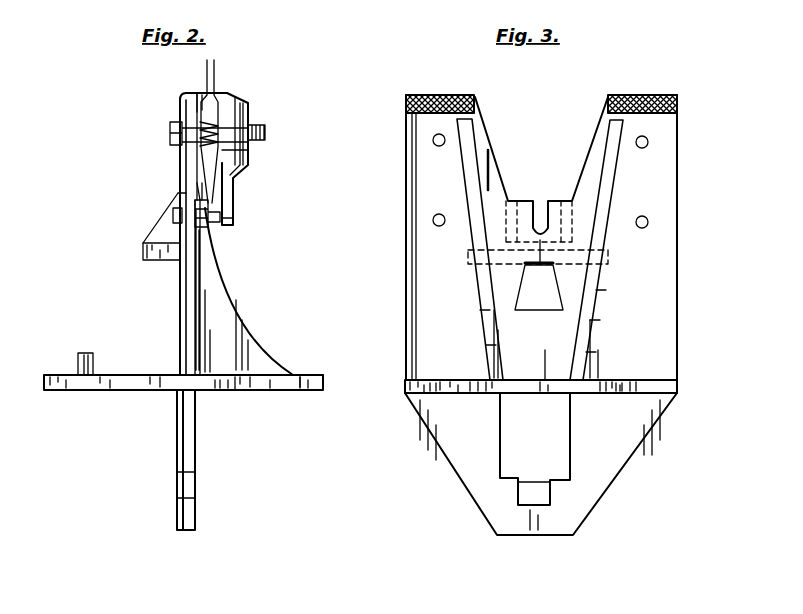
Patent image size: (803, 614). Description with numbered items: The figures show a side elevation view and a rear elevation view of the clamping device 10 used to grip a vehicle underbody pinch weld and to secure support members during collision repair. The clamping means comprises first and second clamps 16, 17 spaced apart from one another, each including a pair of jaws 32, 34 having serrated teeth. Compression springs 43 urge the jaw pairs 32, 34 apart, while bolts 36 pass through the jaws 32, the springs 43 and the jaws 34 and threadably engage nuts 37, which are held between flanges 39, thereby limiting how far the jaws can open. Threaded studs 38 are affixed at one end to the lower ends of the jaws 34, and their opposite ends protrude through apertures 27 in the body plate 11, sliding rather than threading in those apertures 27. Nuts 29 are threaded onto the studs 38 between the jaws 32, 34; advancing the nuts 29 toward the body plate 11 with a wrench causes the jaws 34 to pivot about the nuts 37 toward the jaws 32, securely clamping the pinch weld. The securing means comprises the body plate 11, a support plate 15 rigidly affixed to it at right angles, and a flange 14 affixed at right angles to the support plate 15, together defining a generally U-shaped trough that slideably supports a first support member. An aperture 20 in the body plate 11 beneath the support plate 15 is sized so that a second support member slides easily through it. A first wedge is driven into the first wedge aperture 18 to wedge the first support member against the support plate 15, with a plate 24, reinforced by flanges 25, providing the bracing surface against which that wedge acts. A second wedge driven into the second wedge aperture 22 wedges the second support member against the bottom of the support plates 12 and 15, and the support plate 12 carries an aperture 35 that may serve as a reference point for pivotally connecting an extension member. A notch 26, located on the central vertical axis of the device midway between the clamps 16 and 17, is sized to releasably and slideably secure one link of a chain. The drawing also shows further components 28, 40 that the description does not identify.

In FIG. 2, the clamping device 10 is at (150, 182).
In FIG. 3, the clamping device 10 is at (683, 128).
In FIG. 2, the body plate 11 is at (183, 320).
In FIG. 3, the body plate 11 is at (662, 275).
In FIG. 2, the support plate 12 is at (300, 377).
In FIG. 3, the support plate 12 is at (540, 378).
In FIG. 2, the flange 14 is at (78, 355).
In FIG. 2, the support plate 15 is at (125, 355).
In FIG. 3, the first clamp 16 is at (665, 172).
In FIG. 2, the second clamp 17 is at (180, 112).
In FIG. 3, the second clamp 17 is at (407, 172).
In FIG. 2, the first wedge aperture 18 is at (180, 290).
In FIG. 3, the first wedge aperture 18 is at (533, 300).
In FIG. 2, the aperture 20 is at (177, 425).
In FIG. 3, the aperture 20 is at (558, 425).
In FIG. 2, the second wedge aperture 22 is at (175, 488).
In FIG. 3, the second wedge aperture 22 is at (520, 492).
In FIG. 2, the plate 24 is at (143, 252).
In FIG. 3, the plate 24 is at (470, 262).
In FIG. 2, the flanges 25 is at (165, 223).
In FIG. 3, the notch 26 is at (537, 201).
In FIG. 2, the apertures 27 is at (183, 205).
In FIG. 3, the apertures 27 is at (433, 220).
In FIG. 2, the clamp block 28 is at (232, 195).
In FIG. 2, the nuts 29 is at (208, 245).
In FIG. 2, the jaws 32 is at (203, 95).
In FIG. 3, the jaws 32 is at (445, 95).
In FIG. 2, the jaws 34 is at (216, 95).
In FIG. 2, the aperture 35 is at (230, 400).
In FIG. 3, the aperture 35 is at (445, 380).
In FIG. 2, the bolts 36 is at (170, 135).
In FIG. 2, the nuts 37 is at (255, 122).
In FIG. 2, the threaded studs 38 is at (212, 233).
In FIG. 2, the flanges 39 is at (248, 160).
In FIG. 2, the cam arm 40 is at (232, 306).
In FIG. 3, the cam arm 40 is at (485, 308).
In FIG. 2, the compression springs 43 is at (200, 150).